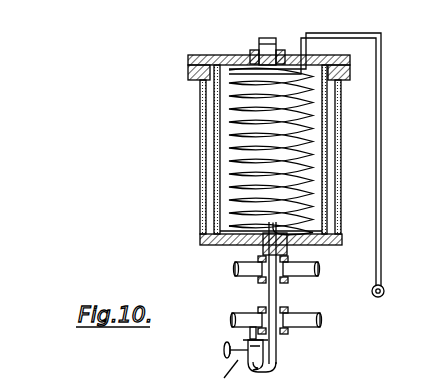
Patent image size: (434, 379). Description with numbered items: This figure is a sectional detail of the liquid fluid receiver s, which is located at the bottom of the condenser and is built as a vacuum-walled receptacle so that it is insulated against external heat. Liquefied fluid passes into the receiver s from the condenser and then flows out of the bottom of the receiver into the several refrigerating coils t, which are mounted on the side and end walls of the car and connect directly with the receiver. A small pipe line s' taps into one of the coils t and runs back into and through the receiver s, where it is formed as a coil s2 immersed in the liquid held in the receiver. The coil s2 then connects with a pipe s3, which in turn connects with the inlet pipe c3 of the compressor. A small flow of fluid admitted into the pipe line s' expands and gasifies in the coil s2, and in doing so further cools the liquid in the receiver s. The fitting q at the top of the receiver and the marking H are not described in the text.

The liquid fluid receiver s is at (257, 150).
The coil s2 is at (300, 155).
The pipe s3 is at (384, 86).
The inlet pipe c3 is at (385, 287).
The valve q is at (270, 40).
The refrigerating coils t is at (252, 268).
The small pipe line s' is at (245, 349).
The valve H is at (195, 368).